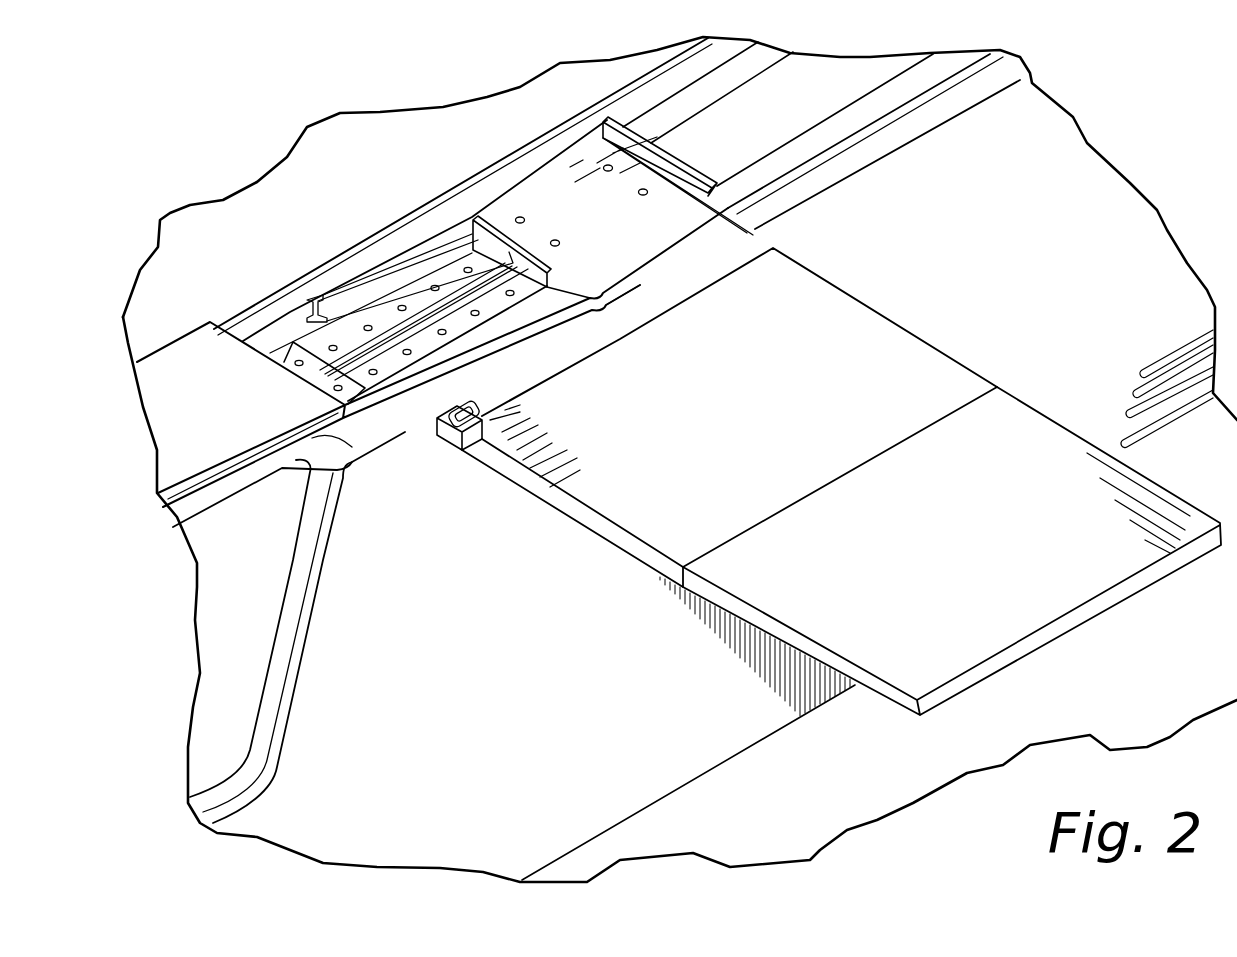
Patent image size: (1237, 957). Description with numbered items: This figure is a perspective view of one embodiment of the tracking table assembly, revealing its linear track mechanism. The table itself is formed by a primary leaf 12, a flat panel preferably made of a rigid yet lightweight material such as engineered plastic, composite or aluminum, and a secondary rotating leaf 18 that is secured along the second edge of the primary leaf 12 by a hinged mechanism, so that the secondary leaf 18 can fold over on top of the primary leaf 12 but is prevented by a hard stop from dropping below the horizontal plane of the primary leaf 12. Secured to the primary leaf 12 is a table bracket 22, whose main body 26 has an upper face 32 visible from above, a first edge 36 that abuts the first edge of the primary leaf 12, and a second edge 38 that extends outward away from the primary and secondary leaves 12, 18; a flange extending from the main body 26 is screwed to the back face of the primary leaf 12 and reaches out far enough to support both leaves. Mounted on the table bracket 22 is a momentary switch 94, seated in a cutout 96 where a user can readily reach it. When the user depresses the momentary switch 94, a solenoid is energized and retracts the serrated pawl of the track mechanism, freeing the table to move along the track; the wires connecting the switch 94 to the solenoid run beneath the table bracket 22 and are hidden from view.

The primary leaf 12 is at (650, 500).
The secondary rotating leaf 18 is at (817, 612).
The table bracket 22 is at (667, 235).
The main body 26 is at (582, 205).
The upper face 32 is at (640, 278).
The first edge 36 is at (620, 340).
The second edge 38 is at (543, 182).
The momentary switch 94 is at (437, 408).
The cutout 96 is at (486, 445).